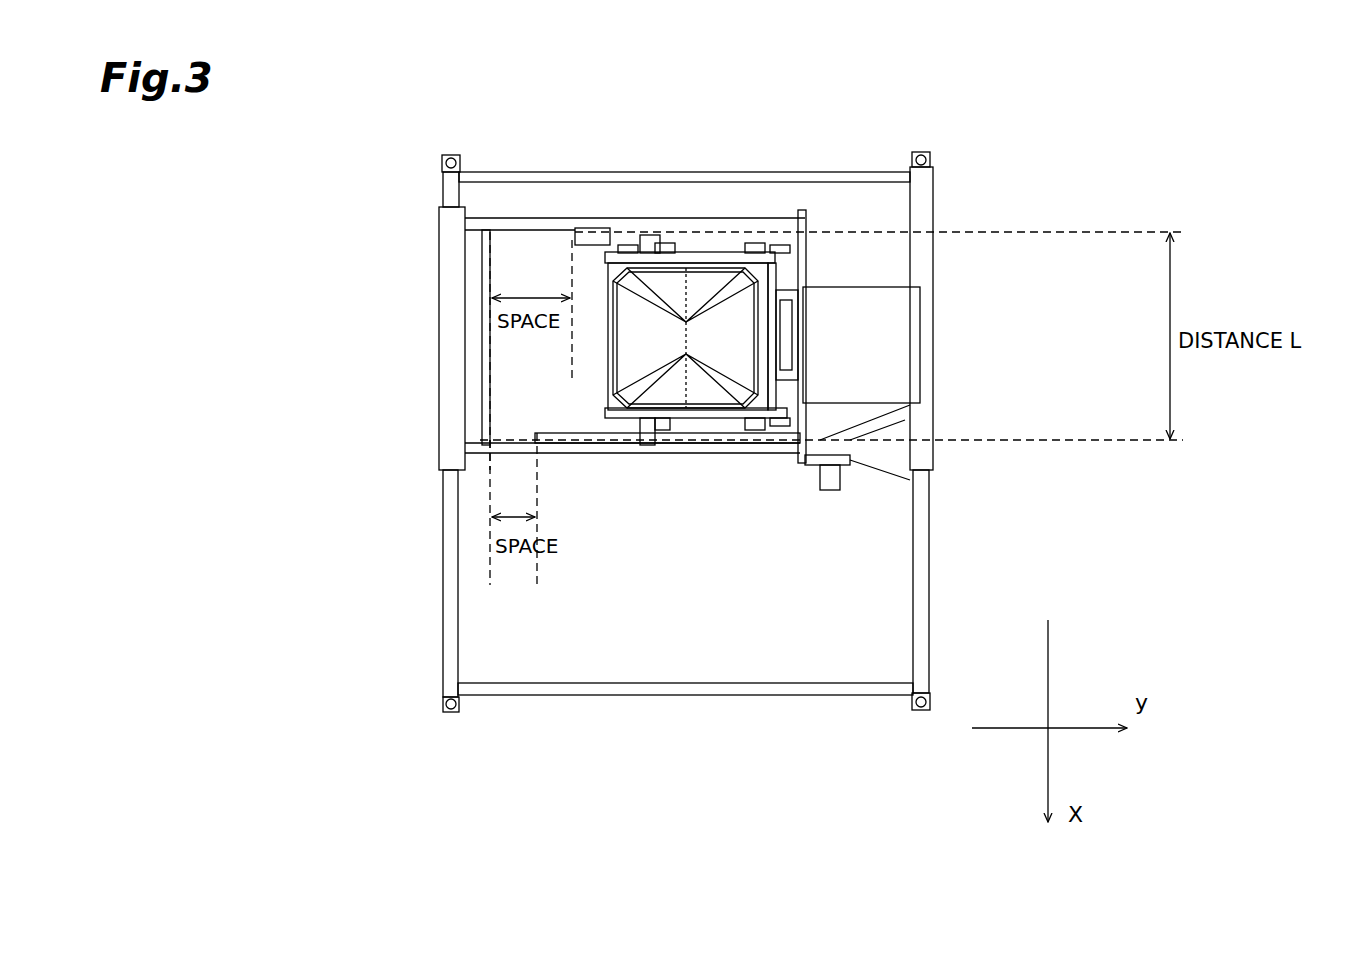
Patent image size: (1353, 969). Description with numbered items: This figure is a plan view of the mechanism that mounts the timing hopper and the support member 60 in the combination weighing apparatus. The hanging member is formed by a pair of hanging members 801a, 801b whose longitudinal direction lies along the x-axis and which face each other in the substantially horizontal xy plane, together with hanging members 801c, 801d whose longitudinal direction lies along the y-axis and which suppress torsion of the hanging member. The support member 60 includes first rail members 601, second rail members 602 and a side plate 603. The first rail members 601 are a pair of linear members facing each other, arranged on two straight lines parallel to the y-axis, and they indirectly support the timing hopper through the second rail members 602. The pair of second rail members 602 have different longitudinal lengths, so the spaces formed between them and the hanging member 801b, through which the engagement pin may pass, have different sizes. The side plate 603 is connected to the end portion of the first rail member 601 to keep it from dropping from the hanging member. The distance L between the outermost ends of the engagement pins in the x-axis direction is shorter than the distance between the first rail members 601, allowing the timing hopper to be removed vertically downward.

The support member 60 is at (527, 482).
The first rail member 601 is at (520, 222).
The second rail member 602 is at (612, 233).
The side plate 603 is at (452, 378).
The hanging member 801a is at (925, 555).
The hanging member 801b is at (452, 660).
The hanging member 801c is at (775, 688).
The hanging member 801d is at (825, 172).